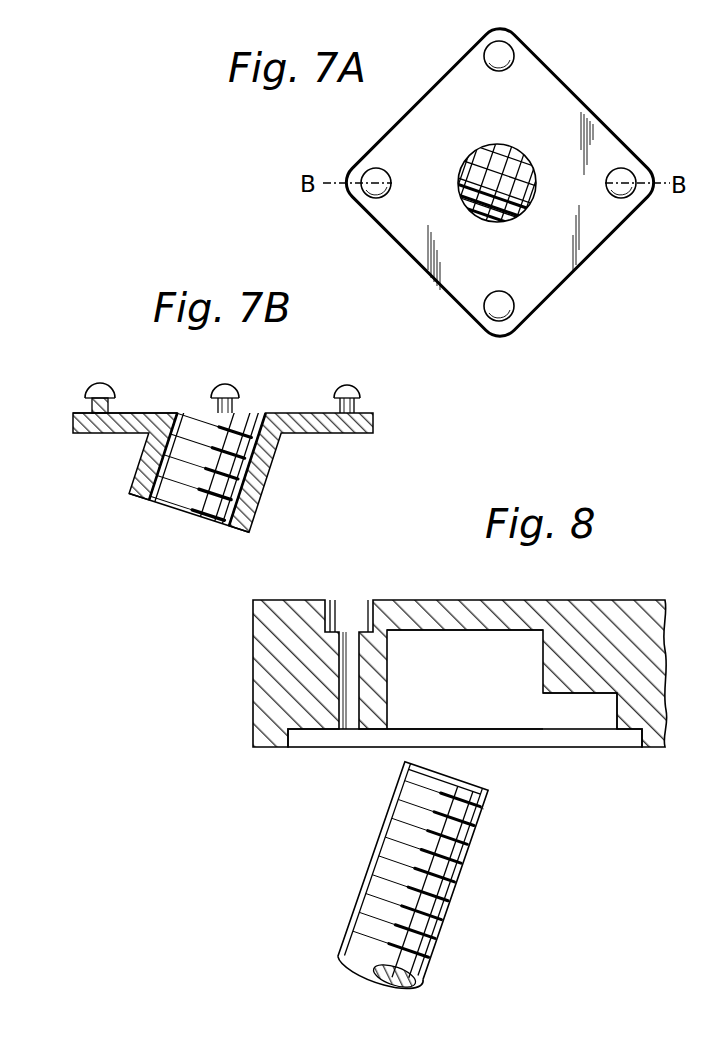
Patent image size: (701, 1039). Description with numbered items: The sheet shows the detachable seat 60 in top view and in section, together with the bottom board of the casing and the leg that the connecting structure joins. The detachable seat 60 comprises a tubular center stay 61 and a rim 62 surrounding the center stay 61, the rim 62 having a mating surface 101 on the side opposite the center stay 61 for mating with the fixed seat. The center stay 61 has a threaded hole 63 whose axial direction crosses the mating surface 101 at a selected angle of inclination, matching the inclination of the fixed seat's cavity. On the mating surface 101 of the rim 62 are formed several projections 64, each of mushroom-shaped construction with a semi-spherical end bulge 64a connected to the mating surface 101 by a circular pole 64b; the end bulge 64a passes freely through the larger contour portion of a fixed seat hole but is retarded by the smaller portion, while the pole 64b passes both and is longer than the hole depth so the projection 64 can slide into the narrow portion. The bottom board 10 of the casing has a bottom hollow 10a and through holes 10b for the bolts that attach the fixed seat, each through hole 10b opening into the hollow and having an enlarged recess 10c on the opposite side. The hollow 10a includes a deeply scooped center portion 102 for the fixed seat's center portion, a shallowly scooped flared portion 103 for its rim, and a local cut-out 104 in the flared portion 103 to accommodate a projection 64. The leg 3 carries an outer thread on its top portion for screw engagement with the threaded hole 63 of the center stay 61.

In FIG. 7A, the detachable seat 60 is at (557, 54).
In FIG. 7B, the detachable seat 60 is at (297, 392).
In FIG. 7B, the tubular center stay 61 is at (265, 467).
In FIG. 7A, the rim 62 is at (560, 98).
In FIG. 7B, the rim 62 is at (330, 427).
In FIG. 7A, the threaded hole 63 is at (517, 163).
In FIG. 7B, the threaded hole 63 is at (187, 510).
In FIG. 7A, the projections 64 is at (492, 45).
In FIG. 7B, the projections 64 is at (228, 385).
In FIG. 7B, the end bulge 64a is at (100, 385).
In FIG. 7B, the pole 64b is at (91, 402).
In FIG. 7B, the mating surface 101 is at (153, 413).
In FIG. 8, the bottom board 10 is at (608, 608).
In FIG. 8, the bottom hollow 10a is at (500, 637).
In FIG. 8, the through holes 10b is at (341, 645).
In FIG. 8, the enlarged recess 10c is at (356, 604).
In FIG. 8, the deeply scooped center portion 102 is at (440, 694).
In FIG. 8, the shallowly scooped flared portion 103 is at (337, 742).
In FIG. 8, the local cut-out 104 is at (575, 713).
In FIG. 8, the leg 3 is at (412, 879).